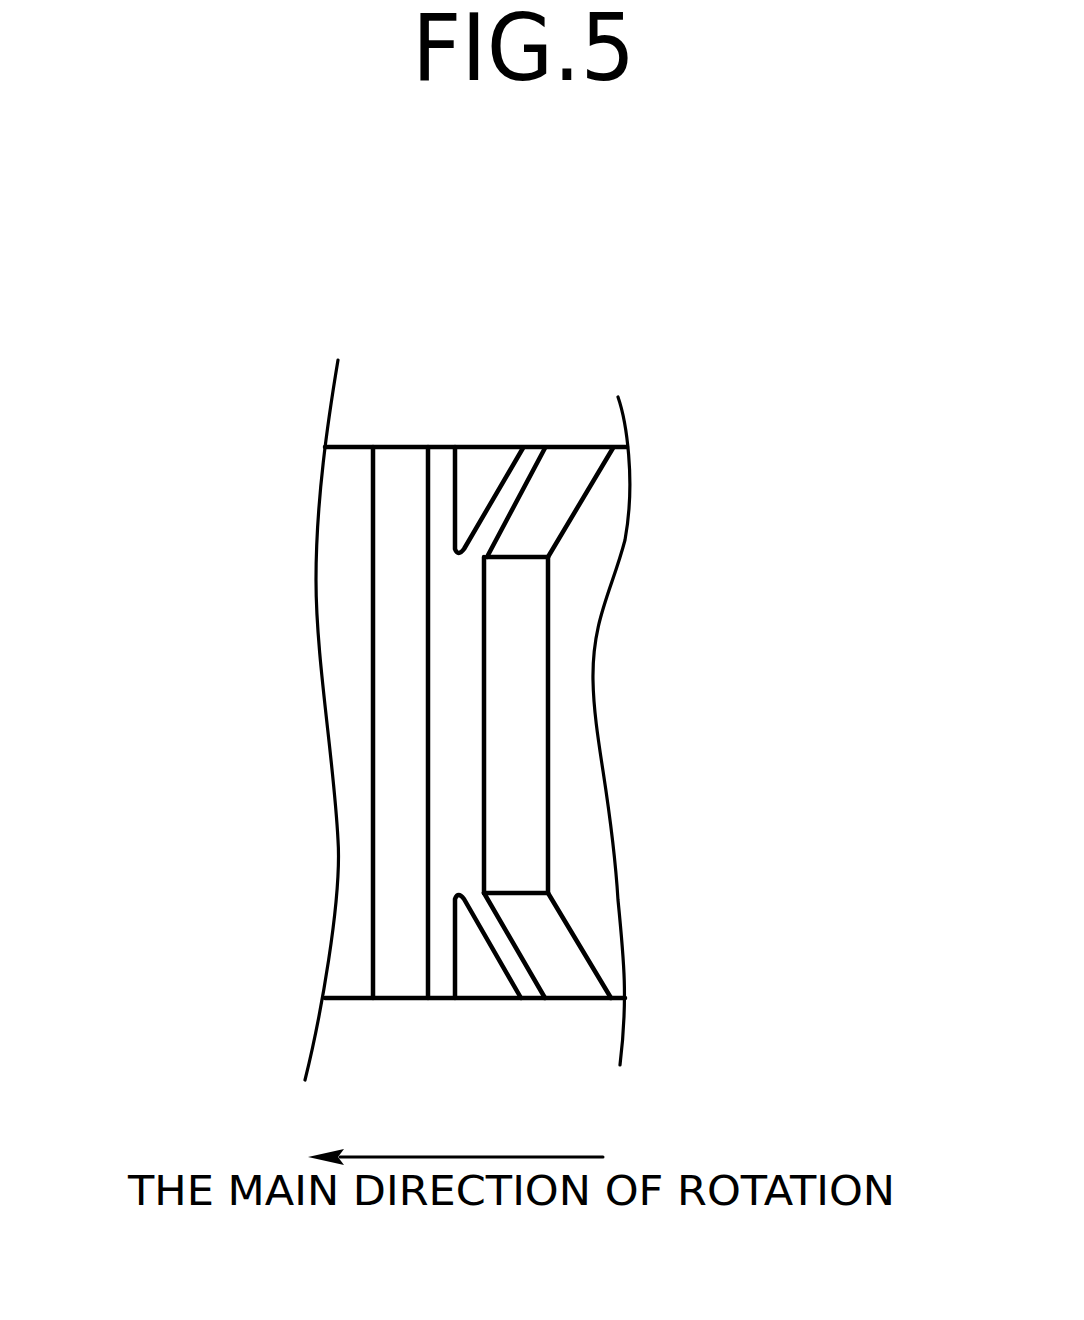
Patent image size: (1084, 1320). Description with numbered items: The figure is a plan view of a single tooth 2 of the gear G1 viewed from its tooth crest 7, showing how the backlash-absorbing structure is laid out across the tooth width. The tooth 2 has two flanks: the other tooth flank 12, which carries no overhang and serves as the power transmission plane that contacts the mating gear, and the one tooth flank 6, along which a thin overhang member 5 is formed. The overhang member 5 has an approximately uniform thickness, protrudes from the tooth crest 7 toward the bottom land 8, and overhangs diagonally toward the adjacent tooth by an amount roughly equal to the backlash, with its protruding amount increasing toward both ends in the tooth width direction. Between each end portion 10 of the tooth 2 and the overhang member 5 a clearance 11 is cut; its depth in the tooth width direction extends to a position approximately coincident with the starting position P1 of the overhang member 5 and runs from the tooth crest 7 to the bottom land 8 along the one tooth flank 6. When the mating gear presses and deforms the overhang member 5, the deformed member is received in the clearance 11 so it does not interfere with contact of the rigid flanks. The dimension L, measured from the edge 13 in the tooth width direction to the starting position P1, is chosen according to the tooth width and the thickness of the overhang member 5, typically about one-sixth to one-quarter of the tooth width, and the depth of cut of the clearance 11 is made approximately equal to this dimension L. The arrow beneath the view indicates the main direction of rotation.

The tooth 2 is at (424, 747).
The overhang member 5 is at (561, 465).
The one tooth flank 6 is at (503, 652).
The tooth crest 7 is at (448, 673).
The bottom land 8 is at (570, 728).
The end portion 10 is at (443, 462).
The clearance 11 is at (482, 472).
The other tooth flank 12 is at (400, 632).
The edge 13 is at (524, 482).
The gear G1 is at (676, 406).
The starting position P1 is at (507, 558).
The dimension L is at (565, 556).